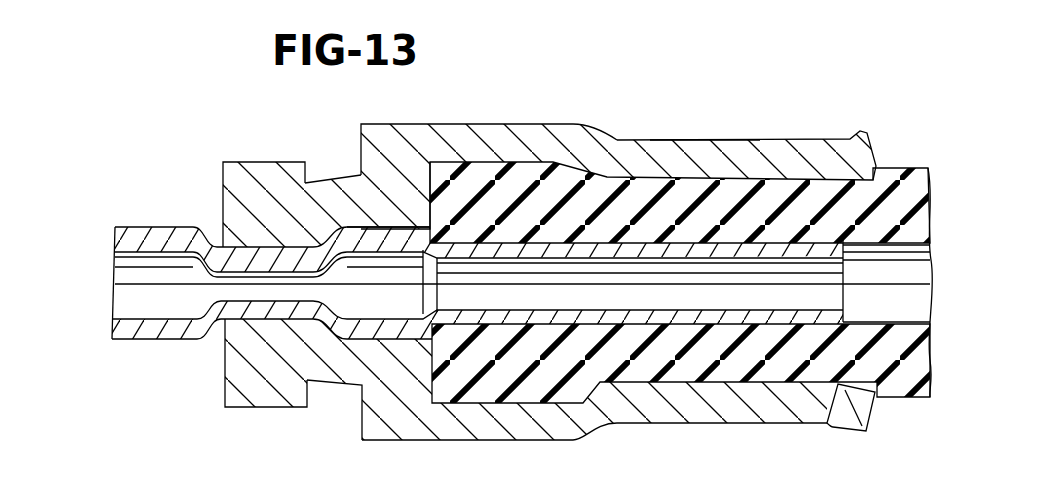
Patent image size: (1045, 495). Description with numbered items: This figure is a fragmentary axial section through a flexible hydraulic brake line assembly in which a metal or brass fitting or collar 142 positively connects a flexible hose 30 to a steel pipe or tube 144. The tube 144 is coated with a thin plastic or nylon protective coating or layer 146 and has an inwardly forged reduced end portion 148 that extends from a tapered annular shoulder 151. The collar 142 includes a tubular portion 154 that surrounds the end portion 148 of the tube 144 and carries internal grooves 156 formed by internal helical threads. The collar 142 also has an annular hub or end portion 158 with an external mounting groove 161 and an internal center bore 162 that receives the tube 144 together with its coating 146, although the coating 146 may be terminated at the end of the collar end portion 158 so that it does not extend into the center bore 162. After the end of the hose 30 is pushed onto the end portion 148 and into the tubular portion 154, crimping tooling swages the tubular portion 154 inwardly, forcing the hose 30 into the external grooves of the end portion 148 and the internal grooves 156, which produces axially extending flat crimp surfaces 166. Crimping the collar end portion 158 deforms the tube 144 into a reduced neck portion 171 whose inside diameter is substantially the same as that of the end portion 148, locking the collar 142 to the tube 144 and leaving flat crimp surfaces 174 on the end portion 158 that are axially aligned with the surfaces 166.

The flexible hose 30 is at (893, 177).
The fitting or collar 142 is at (546, 122).
The steel pipe or tube 144 is at (153, 229).
The plastic protective coating or layer 146 is at (168, 345).
The reduced end portion 148 is at (673, 330).
The tapered annular shoulder 151 is at (437, 332).
The tubular portion 154 is at (770, 145).
The internal grooves 156 is at (830, 381).
The annular hub or end portion 158 is at (242, 166).
The external mounting groove 161 is at (330, 390).
The internal center bore 162 is at (385, 222).
The flat crimp surfaces 166 is at (707, 137).
The reduced neck portion 171 is at (267, 311).
The flat crimp surfaces 174 is at (277, 164).